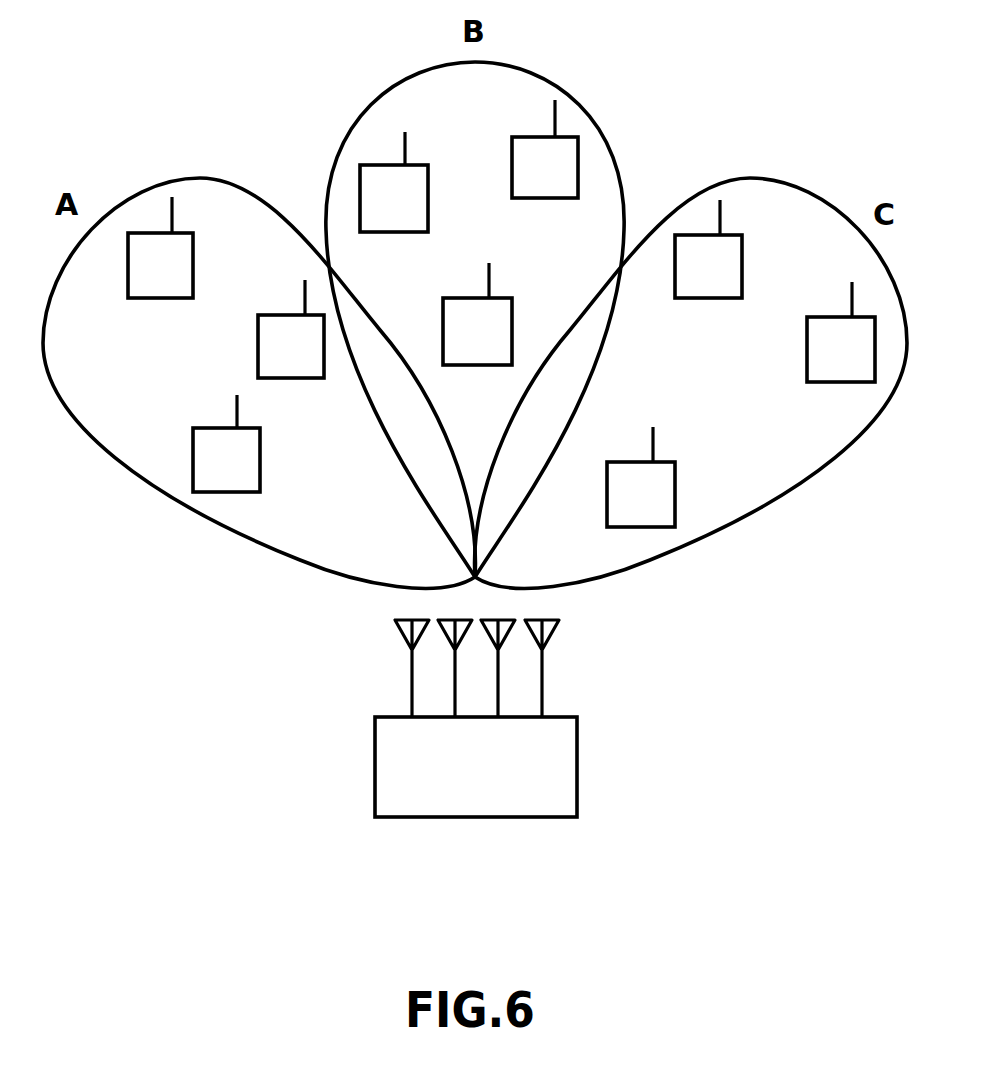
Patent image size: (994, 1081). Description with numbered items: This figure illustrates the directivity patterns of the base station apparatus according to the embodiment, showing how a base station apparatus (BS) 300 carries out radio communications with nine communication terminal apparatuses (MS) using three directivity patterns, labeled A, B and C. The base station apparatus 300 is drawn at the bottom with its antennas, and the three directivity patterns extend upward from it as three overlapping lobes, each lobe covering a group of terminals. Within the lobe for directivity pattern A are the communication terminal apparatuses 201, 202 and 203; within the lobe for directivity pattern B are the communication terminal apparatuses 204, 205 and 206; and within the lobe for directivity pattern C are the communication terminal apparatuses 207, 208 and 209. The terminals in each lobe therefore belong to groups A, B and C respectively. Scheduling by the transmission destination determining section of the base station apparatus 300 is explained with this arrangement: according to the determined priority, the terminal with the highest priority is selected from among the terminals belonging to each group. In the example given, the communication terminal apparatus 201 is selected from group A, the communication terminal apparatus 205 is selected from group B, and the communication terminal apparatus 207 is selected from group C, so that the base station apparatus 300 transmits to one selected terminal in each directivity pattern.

The communication terminal apparatus 201 is at (240, 240).
The communication terminal apparatus 202 is at (258, 360).
The communication terminal apparatus 203 is at (305, 455).
The communication terminal apparatus 204 is at (477, 190).
The communication terminal apparatus 205 is at (512, 310).
The communication terminal apparatus 206 is at (512, 135).
The communication terminal apparatus 207 is at (785, 248).
The communication terminal apparatus 208 is at (807, 348).
The communication terminal apparatus 209 is at (675, 462).
The base station apparatus 300 is at (622, 722).